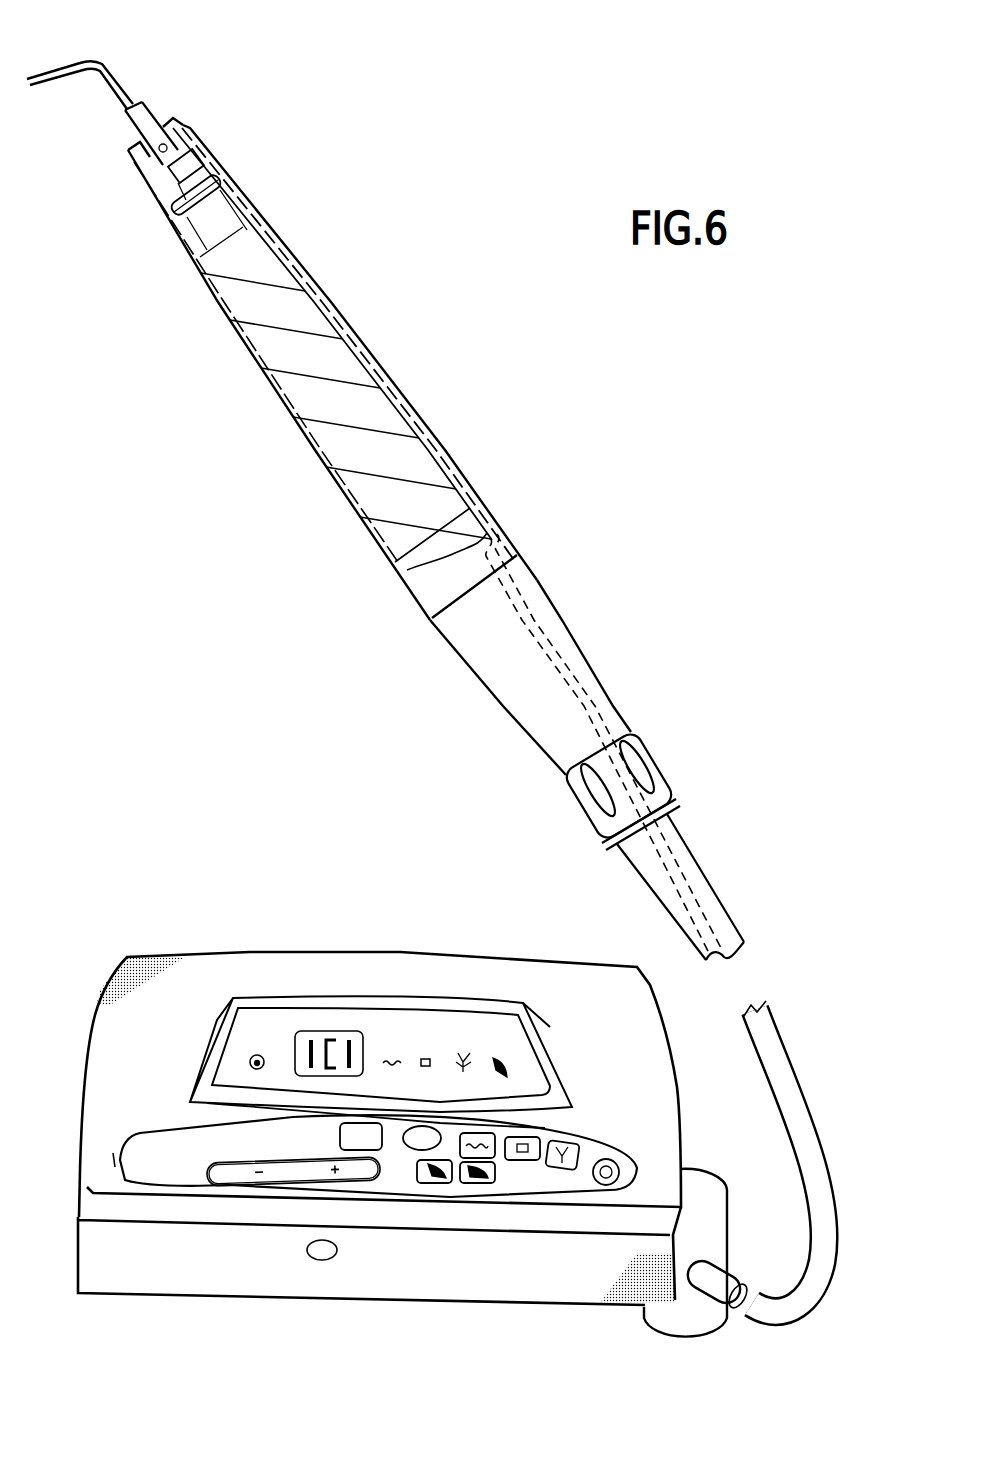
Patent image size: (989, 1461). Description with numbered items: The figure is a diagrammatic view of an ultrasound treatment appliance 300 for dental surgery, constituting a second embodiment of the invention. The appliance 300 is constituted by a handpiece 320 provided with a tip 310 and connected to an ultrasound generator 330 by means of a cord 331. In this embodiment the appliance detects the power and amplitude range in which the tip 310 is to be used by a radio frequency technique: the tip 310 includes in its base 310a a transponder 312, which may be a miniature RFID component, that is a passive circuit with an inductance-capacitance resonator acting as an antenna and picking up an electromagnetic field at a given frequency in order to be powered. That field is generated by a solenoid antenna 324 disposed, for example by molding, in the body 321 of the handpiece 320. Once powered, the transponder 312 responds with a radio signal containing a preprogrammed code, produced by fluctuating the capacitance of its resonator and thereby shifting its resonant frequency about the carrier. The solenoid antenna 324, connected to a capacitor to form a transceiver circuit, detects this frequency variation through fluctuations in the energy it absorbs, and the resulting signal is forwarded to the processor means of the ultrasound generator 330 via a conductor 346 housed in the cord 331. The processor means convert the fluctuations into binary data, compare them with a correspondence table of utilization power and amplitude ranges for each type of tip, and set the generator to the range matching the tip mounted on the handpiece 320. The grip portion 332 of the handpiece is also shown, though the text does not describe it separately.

The ultrasound treatment appliance 300 is at (160, 437).
The tip 310 is at (82, 63).
The base 310a is at (143, 116).
The transponder 312 is at (172, 141).
The solenoid antenna 324 is at (170, 207).
The handpiece 320 is at (313, 460).
The body 321 is at (356, 330).
The handpiece grip body 332 is at (497, 688).
The conductor 346 is at (597, 685).
The ultrasound generator 330 is at (316, 928).
The cord 331 is at (790, 1043).